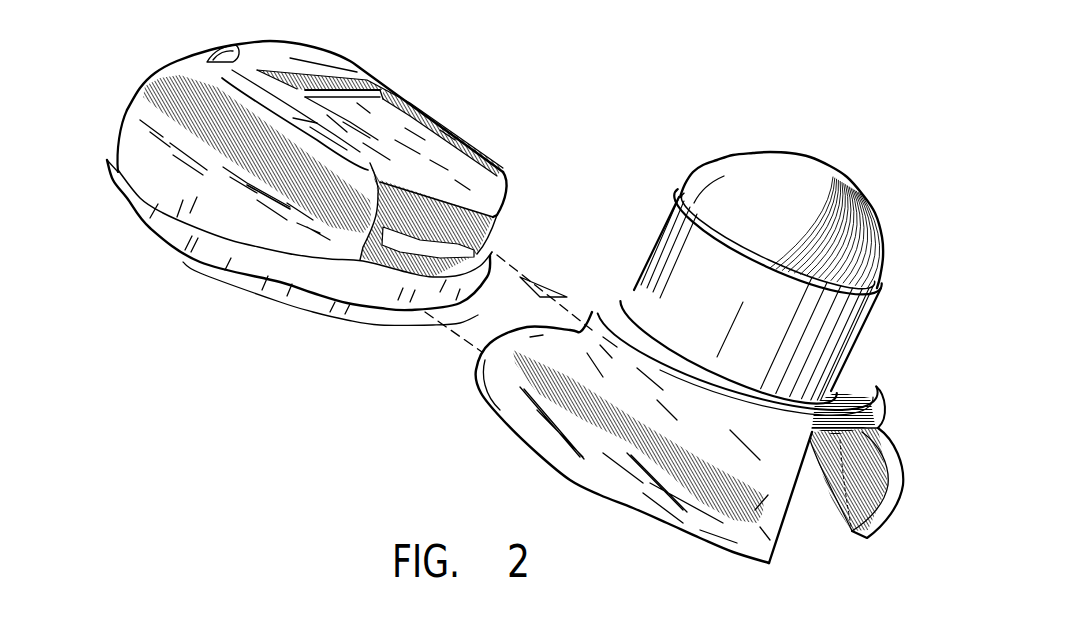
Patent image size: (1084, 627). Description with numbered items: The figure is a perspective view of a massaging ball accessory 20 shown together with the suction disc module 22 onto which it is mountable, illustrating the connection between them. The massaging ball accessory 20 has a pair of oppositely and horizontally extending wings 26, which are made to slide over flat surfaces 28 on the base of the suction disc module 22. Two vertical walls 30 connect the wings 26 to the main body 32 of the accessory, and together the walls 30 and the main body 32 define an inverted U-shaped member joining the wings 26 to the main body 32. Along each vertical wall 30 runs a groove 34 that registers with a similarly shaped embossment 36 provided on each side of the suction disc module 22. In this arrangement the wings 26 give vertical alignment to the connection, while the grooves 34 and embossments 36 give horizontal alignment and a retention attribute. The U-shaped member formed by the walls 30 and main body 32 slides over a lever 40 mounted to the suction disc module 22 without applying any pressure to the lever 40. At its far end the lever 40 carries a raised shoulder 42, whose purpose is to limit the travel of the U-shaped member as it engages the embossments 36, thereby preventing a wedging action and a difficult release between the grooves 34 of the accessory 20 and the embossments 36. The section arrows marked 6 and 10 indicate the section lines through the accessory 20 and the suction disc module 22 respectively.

The section line 6- 6 is at (540, 460).
The section line 10- 10 is at (130, 233).
The massaging ball accessory 20 is at (681, 196).
The suction disc module 22 is at (140, 87).
The wings 26 is at (667, 497).
The flat surfaces 28 is at (241, 201).
The vertical walls 30 is at (780, 533).
The main body 32 is at (840, 447).
The groove 34 is at (595, 300).
The embossment 36 is at (228, 82).
The lever 40 is at (500, 180).
The raised shoulder 42 is at (353, 70).